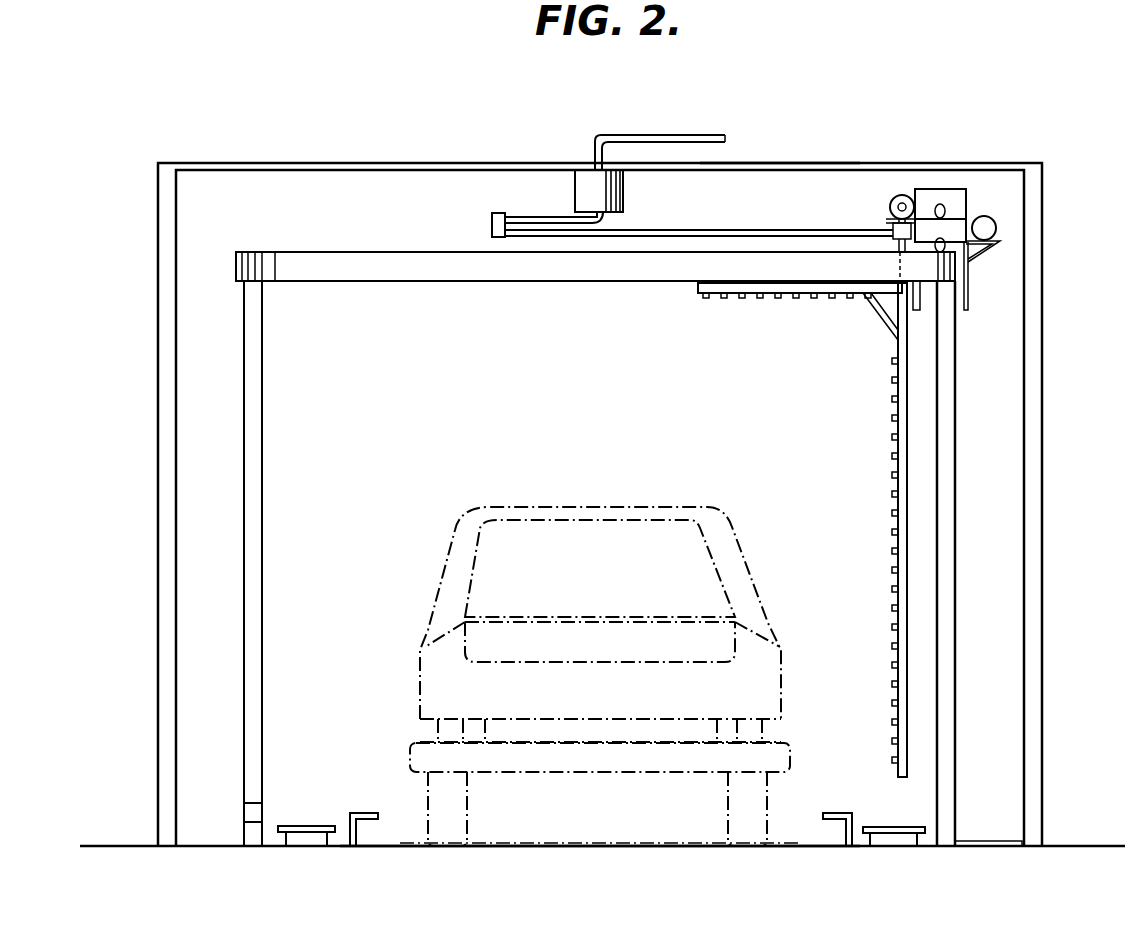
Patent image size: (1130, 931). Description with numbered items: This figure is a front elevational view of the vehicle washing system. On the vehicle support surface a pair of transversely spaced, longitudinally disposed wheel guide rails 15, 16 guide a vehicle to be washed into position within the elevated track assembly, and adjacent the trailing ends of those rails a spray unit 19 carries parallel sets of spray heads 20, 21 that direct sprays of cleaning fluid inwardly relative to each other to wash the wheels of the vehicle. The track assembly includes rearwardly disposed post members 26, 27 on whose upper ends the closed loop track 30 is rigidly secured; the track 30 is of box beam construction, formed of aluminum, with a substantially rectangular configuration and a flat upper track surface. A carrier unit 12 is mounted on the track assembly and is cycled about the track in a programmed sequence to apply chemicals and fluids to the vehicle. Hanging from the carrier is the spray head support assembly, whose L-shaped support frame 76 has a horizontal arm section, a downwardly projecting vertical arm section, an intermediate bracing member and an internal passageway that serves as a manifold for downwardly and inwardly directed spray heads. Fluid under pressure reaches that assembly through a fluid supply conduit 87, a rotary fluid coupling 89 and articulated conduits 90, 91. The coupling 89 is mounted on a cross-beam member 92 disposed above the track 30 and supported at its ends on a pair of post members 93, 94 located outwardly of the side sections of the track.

The carrier unit 12 is at (988, 206).
The wheel guide rail 15 is at (308, 825).
The wheel guide rail 16 is at (900, 825).
The spray unit 19 is at (593, 823).
The spray heads 20 is at (376, 802).
The spray heads 21 is at (852, 802).
The post member 26 is at (262, 502).
The post member 27 is at (955, 548).
The closed loop track 30 is at (445, 292).
The L-shaped support frame 76 is at (892, 403).
The fluid supply conduit 87 is at (718, 123).
The rotary fluid coupling 89 is at (624, 196).
The articulated conduit 90 is at (520, 216).
The articulated conduit 91 is at (739, 222).
The cross-beam member 92 is at (788, 178).
The post member 93 is at (158, 522).
The post member 94 is at (1043, 580).